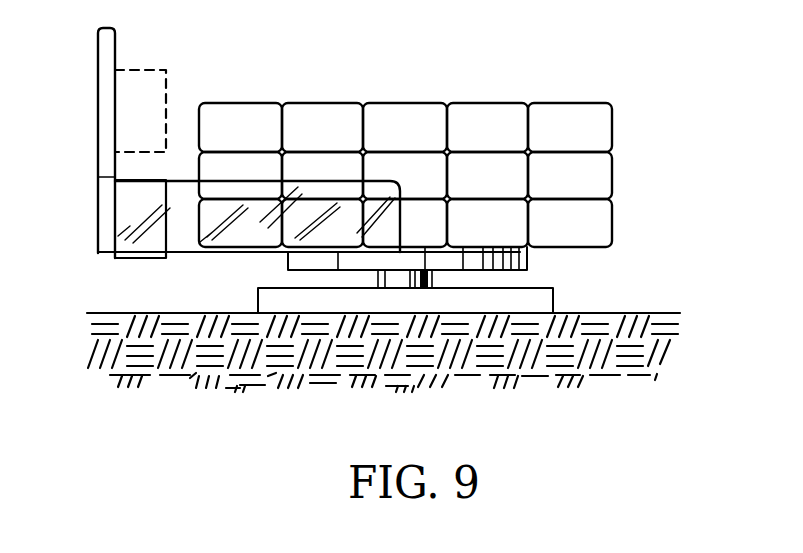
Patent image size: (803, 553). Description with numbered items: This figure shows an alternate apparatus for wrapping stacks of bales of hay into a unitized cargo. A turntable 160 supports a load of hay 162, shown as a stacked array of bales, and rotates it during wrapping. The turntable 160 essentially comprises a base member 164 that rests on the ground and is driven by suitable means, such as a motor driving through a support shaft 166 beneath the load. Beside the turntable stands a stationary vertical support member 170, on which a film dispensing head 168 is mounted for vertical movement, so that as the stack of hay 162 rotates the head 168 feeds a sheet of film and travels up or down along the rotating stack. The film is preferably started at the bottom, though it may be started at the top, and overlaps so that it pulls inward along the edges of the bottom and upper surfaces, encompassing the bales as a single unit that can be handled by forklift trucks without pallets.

The turntable 160 is at (517, 262).
The load of hay 162 is at (490, 56).
The base member 164 is at (270, 290).
The support shaft 166 is at (432, 288).
The film dispensing head 168 is at (130, 225).
The stationary vertical support member 170 is at (108, 115).